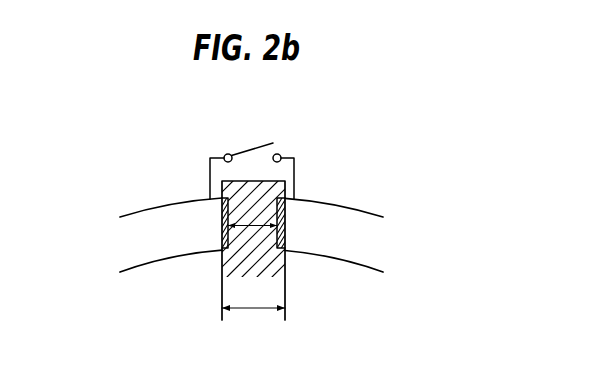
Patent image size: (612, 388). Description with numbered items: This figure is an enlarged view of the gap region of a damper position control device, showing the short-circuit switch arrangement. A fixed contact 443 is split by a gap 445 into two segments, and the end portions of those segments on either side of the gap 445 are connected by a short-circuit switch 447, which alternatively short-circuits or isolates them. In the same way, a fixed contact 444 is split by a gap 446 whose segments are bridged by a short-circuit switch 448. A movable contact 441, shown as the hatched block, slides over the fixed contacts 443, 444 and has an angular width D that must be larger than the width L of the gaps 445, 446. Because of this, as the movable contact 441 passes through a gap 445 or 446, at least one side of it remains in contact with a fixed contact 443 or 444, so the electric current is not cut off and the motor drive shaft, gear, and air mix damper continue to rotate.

The movable contact 441 is at (222, 277).
The fixed contact 443 is at (358, 250).
The fixed contact 444 is at (271, 282).
The gap 445 is at (222, 237).
The gap 446 is at (195, 210).
The short-circuit switch 447 is at (294, 158).
The short-circuit switch 448 is at (347, 168).